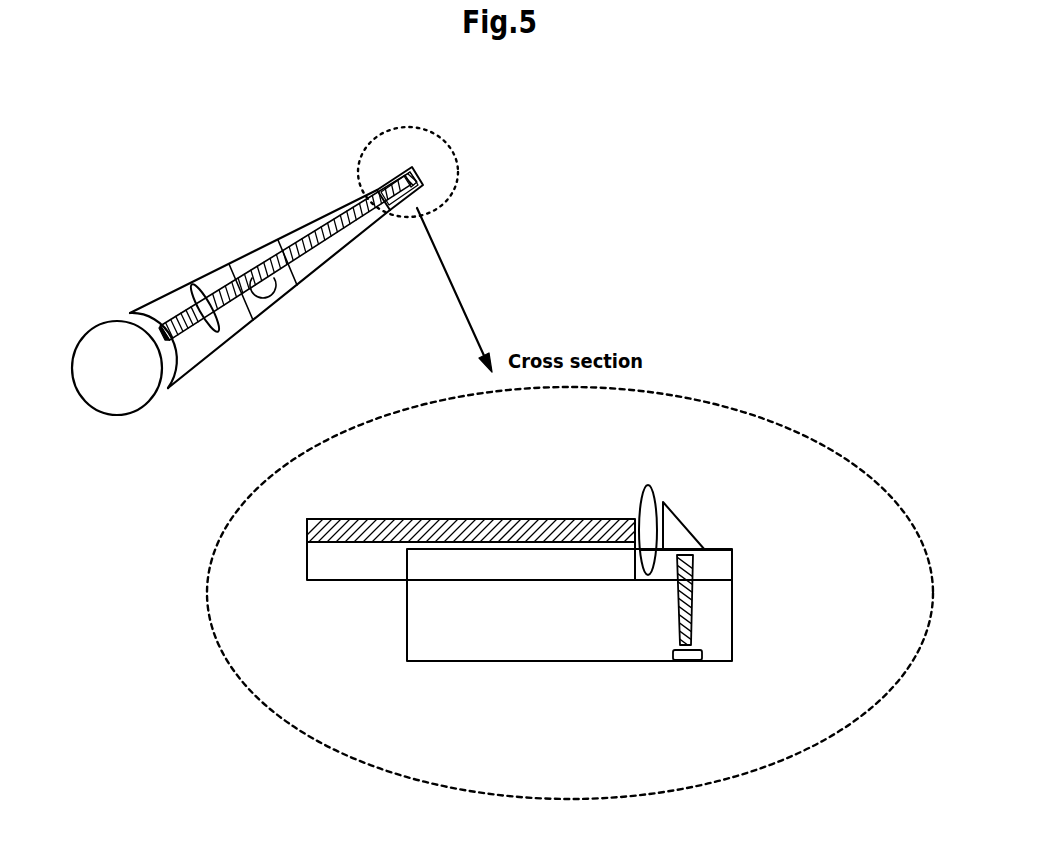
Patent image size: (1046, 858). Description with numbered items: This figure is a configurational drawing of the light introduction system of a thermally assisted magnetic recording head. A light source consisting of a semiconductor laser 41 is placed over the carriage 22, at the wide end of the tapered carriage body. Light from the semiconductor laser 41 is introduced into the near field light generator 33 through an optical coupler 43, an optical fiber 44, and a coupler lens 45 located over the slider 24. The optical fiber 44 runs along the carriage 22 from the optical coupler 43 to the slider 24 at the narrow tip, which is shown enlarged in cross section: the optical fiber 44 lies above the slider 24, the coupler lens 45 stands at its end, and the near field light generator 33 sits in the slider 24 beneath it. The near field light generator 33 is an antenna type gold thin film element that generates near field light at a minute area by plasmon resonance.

The carriage 22 is at (199, 358).
The slider 24 is at (422, 182).
The near field light generator 33 is at (710, 648).
The semiconductor laser 41 is at (142, 309).
The optical coupler 43 is at (200, 292).
The optical fiber 44 is at (289, 237).
The coupler lens 45 is at (660, 490).